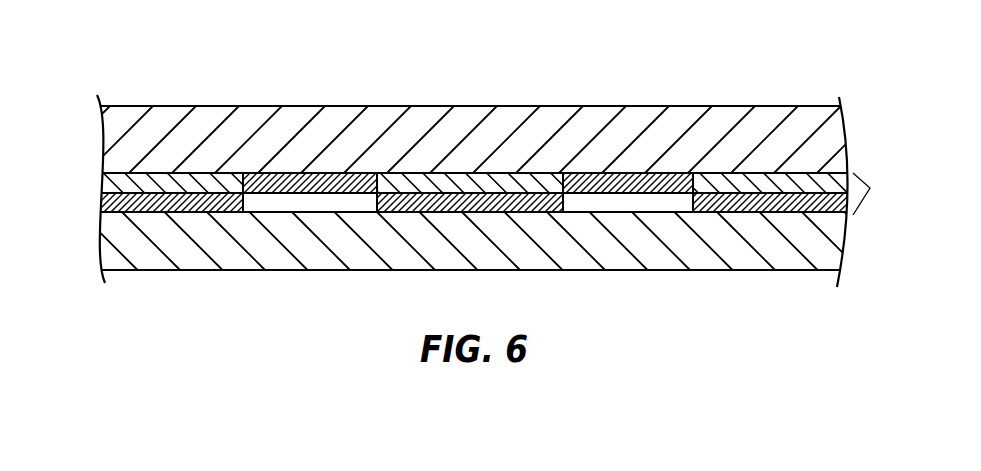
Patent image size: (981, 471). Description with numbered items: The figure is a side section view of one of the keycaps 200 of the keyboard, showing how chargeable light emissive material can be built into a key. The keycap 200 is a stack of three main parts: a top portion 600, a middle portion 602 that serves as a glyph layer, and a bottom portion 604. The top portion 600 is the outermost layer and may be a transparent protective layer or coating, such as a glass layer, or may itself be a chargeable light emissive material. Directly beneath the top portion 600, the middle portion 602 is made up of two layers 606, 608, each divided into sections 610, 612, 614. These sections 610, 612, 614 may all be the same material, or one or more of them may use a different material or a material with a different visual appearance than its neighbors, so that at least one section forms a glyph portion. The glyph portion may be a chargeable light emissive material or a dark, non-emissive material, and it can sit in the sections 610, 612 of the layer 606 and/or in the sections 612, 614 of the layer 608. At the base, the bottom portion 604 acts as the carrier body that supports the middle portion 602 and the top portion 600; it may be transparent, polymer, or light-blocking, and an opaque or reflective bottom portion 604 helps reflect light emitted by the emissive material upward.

The keycap 200 is at (143, 47).
The top portion 600 is at (752, 127).
The middle portion 602 is at (870, 188).
The bottom portion 604 is at (818, 253).
The layer 606 is at (96, 180).
The layer 608 is at (96, 206).
The section 610 is at (210, 178).
The section 612 is at (320, 185).
The section 614 is at (313, 205).